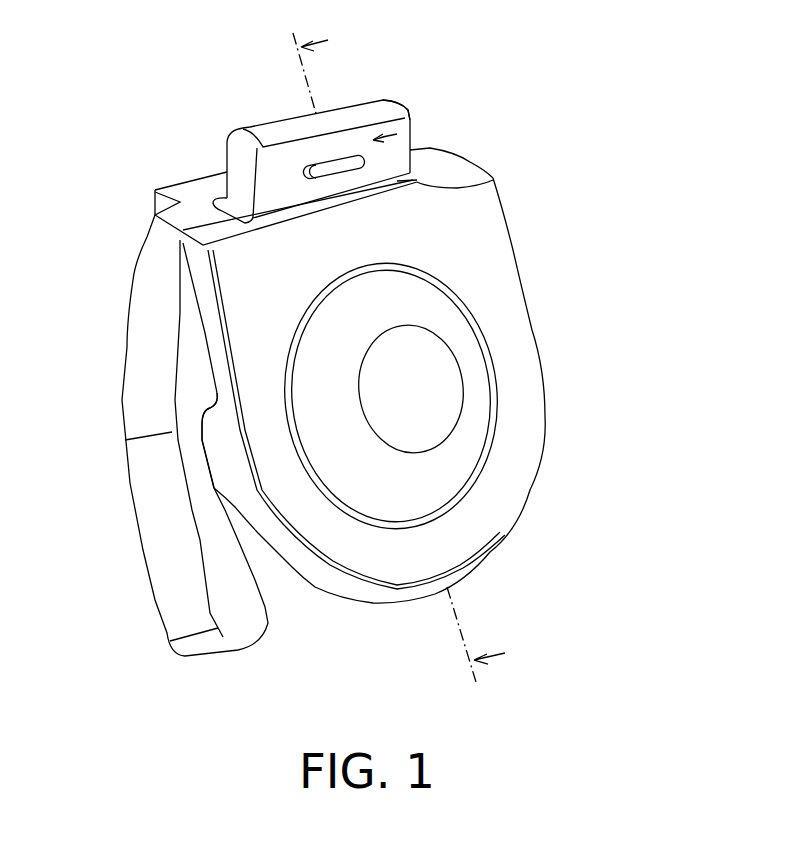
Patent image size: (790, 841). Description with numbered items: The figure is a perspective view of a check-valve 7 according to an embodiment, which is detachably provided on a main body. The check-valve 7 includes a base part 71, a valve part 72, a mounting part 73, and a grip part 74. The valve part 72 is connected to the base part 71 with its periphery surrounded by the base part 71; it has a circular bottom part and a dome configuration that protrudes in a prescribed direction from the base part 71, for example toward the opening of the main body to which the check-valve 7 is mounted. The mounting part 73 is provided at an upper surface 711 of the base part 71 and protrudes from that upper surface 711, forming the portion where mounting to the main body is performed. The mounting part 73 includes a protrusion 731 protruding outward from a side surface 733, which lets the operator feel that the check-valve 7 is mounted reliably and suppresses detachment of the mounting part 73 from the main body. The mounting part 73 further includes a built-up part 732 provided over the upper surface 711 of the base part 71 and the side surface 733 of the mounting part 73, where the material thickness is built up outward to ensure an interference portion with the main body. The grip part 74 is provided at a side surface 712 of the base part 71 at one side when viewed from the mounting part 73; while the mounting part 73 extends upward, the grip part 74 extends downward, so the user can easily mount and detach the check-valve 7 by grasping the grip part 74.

The check-valve 7 is at (630, 177).
The base part 71 is at (510, 323).
The valve part 72 is at (430, 403).
The mounting part 73 is at (333, 117).
The grip part 74 is at (160, 515).
The upper surface 711 is at (443, 163).
The side surface 712 is at (230, 440).
The protrusion 731 is at (330, 167).
The built-up part 732 is at (220, 200).
The side surface 733 is at (407, 127).